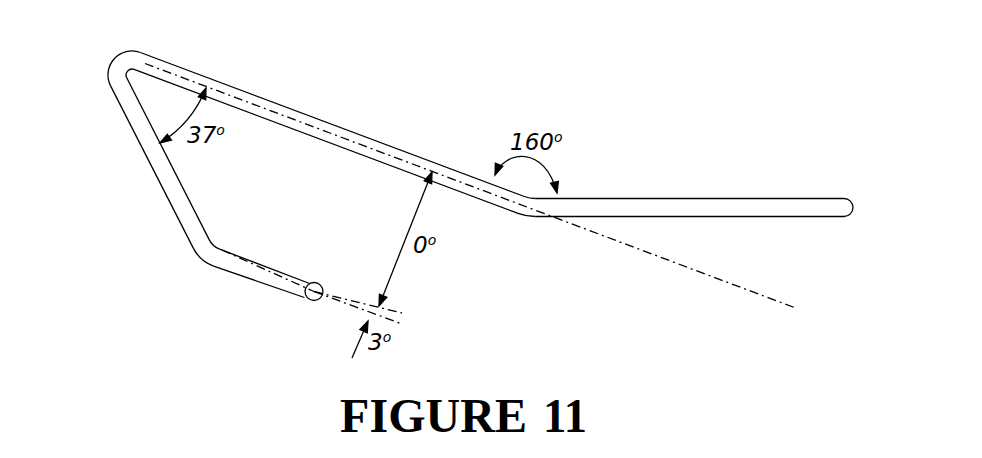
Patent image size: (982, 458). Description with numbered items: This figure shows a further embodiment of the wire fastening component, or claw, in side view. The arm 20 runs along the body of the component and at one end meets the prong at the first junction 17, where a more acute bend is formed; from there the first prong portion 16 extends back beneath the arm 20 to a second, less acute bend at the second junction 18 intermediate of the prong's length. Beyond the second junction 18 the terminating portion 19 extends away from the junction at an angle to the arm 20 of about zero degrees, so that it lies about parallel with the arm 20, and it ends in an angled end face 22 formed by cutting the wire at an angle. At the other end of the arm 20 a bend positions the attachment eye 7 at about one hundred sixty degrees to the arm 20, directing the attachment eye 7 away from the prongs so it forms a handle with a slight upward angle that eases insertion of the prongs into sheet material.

The attachment eye 7 is at (853, 197).
The first prong portion 16 is at (143, 166).
The first junction 17 is at (110, 78).
The second junction 18 is at (201, 250).
The terminating portion 19 is at (261, 292).
The arm 20 is at (483, 173).
The angled end face 22 is at (330, 283).